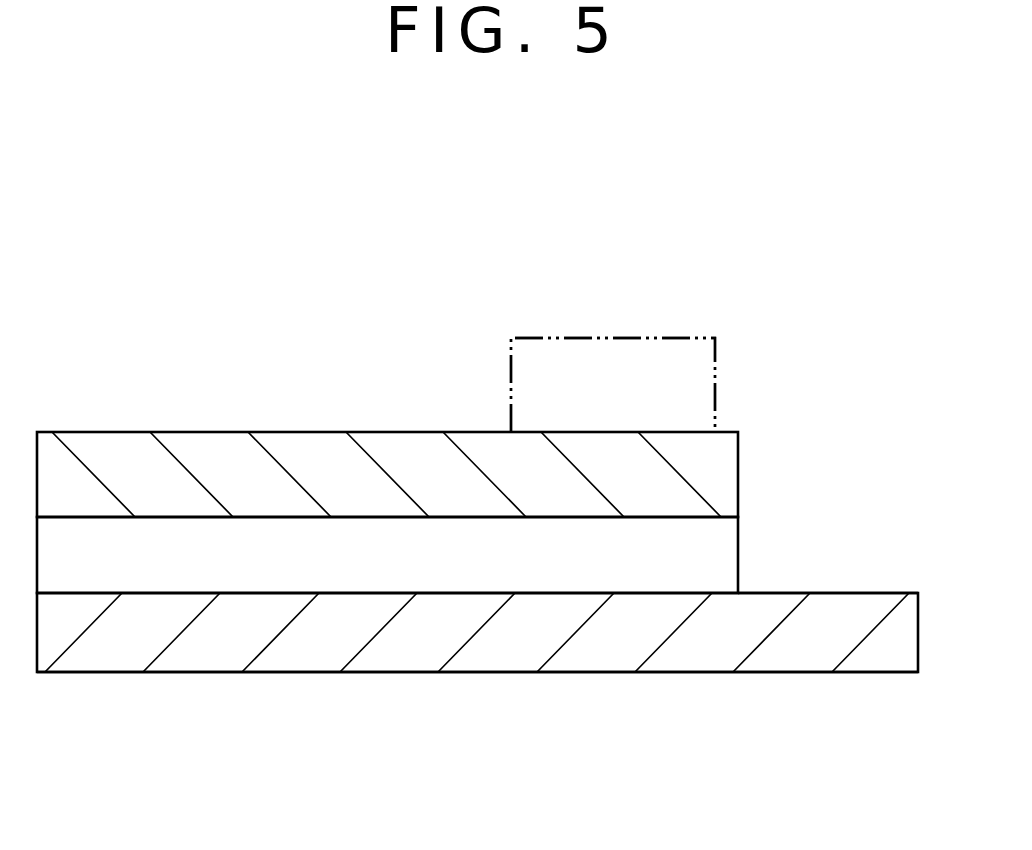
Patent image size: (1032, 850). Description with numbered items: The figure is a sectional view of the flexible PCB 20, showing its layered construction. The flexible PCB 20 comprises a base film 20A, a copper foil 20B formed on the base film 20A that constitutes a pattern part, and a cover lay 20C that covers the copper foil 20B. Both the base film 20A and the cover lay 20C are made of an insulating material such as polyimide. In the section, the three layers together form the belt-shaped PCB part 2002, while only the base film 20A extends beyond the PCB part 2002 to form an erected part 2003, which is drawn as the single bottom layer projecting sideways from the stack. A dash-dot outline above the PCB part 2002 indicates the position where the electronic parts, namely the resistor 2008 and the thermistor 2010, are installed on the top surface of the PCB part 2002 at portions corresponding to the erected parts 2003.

The flexible PCB 20 is at (86, 388).
The base film 20A is at (727, 640).
The copper foil 20B is at (532, 570).
The cover lay 20C is at (335, 432).
The PCB part 2002 is at (305, 673).
The erected part 2003 is at (860, 592).
The resistor 2008 is at (700, 338).
The thermistor 2010 is at (613, 385).